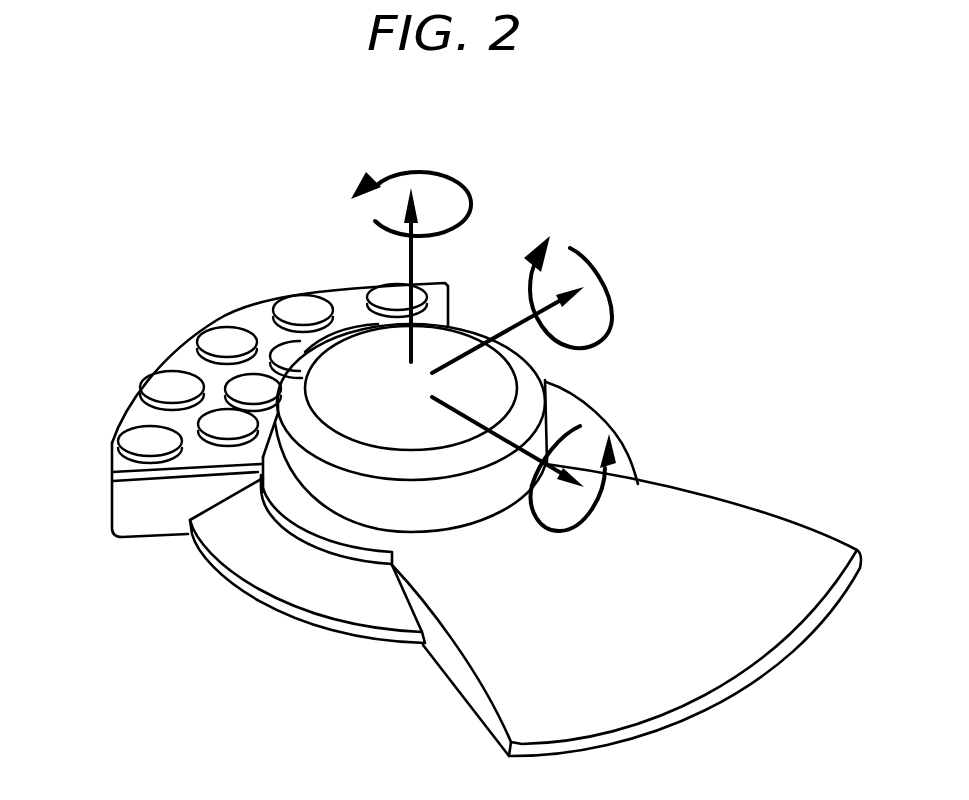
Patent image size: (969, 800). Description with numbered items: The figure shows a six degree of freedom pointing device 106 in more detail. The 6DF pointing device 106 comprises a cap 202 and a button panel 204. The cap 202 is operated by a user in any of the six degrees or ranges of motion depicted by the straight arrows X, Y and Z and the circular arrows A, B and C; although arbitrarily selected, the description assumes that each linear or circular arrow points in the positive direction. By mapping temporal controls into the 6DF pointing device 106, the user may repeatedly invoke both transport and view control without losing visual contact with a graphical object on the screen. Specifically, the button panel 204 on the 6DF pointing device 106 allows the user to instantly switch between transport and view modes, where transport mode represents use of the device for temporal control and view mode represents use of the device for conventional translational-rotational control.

The 6DF pointing device 106 is at (445, 464).
The cap 202 is at (530, 372).
The button panel 204 is at (117, 410).